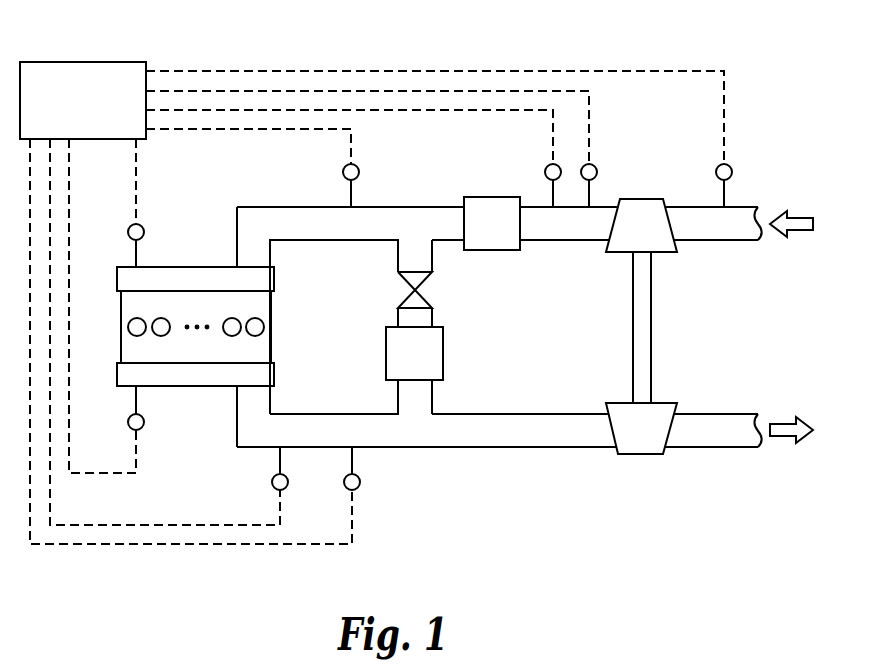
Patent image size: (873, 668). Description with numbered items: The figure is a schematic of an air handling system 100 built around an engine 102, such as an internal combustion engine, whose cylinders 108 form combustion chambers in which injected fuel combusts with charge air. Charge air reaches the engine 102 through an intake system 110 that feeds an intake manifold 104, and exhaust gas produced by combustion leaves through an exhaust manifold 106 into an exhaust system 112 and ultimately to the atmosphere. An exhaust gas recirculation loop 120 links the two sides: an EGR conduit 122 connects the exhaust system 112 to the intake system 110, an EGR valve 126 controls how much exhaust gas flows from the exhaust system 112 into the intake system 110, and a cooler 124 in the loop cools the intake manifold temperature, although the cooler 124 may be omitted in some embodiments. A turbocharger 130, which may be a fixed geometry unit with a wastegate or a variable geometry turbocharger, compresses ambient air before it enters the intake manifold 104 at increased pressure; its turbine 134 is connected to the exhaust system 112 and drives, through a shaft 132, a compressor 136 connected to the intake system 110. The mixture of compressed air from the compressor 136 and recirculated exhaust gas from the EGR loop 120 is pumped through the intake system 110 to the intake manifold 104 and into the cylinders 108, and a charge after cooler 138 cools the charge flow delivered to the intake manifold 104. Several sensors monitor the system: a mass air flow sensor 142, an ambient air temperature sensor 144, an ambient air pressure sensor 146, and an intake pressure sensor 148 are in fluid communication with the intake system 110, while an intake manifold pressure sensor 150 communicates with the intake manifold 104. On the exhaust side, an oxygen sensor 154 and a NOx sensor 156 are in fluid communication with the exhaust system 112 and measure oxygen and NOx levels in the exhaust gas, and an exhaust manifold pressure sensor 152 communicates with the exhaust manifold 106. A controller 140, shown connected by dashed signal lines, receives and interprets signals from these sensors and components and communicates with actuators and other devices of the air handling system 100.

The air handling system 100 is at (762, 69).
The engine 102 is at (209, 318).
The intake manifold 104 is at (191, 266).
The exhaust manifold 106 is at (188, 375).
The cylinders 108 is at (267, 313).
The intake system 110 is at (441, 157).
The exhaust system 112 is at (440, 484).
The exhaust gas recirculation loop 120 is at (483, 299).
The EGR conduit 122 is at (433, 398).
The cooler 124 is at (431, 366).
The EGR valve 126 is at (430, 282).
The turbocharger 130 is at (698, 309).
The shaft 132 is at (652, 337).
The turbine 134 is at (666, 403).
The compressor 136 is at (665, 253).
The charge after cooler 138 is at (508, 235).
The controller 140 is at (101, 111).
The mass air flow sensor 142 is at (718, 166).
The ambient air temperature sensor 144 is at (595, 166).
The ambient air pressure sensor 146 is at (545, 171).
The intake pressure sensor 148 is at (343, 176).
The intake manifold pressure sensor 150 is at (142, 226).
The exhaust manifold pressure sensor 152 is at (129, 424).
The oxygen sensor 154 is at (272, 485).
The NOx sensor 156 is at (347, 489).